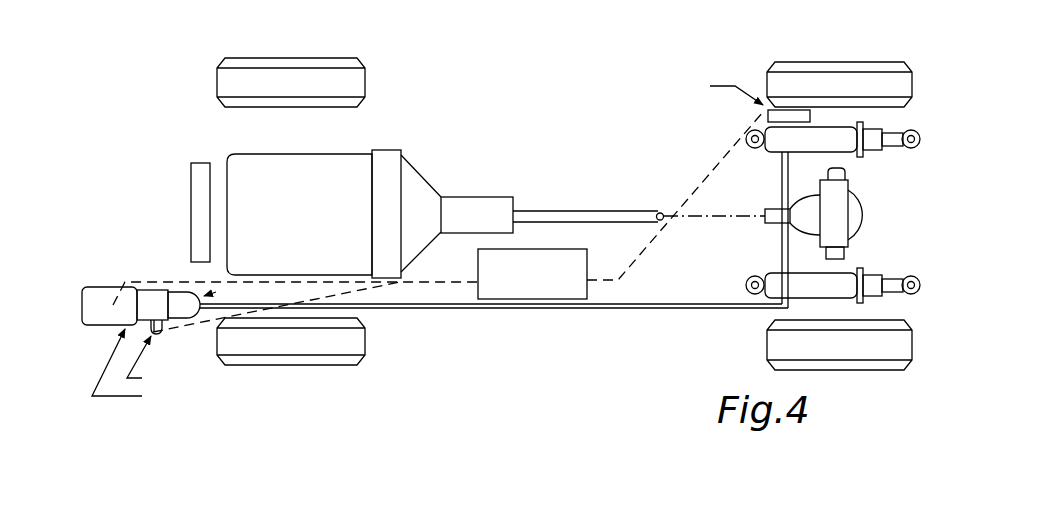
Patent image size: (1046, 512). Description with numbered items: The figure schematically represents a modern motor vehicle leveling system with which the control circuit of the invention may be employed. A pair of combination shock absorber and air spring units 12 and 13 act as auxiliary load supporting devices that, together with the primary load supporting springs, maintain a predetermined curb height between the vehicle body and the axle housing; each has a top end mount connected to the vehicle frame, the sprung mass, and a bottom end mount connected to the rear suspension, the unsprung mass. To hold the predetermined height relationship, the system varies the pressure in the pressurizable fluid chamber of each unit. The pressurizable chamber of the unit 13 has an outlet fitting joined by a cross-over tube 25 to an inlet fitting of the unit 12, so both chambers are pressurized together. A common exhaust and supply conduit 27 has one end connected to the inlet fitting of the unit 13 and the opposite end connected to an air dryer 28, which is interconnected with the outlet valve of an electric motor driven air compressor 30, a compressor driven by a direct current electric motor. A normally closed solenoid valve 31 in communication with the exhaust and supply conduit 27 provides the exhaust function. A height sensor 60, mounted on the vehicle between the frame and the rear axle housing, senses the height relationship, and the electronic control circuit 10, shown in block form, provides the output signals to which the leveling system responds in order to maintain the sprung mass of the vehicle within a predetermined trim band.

The electronic control circuit 10 is at (583, 258).
The combination shock absorber and air spring unit 12 is at (846, 146).
The combination shock absorber and air spring unit 13 is at (846, 277).
The cross-over tube 25 is at (782, 195).
The common exhaust and supply conduit 27 is at (625, 309).
The air dryer 28 is at (183, 309).
The electric motor driven air compressor 30 is at (91, 296).
The normally closed solenoid valve 31 is at (157, 335).
The height sensor 60 is at (786, 118).